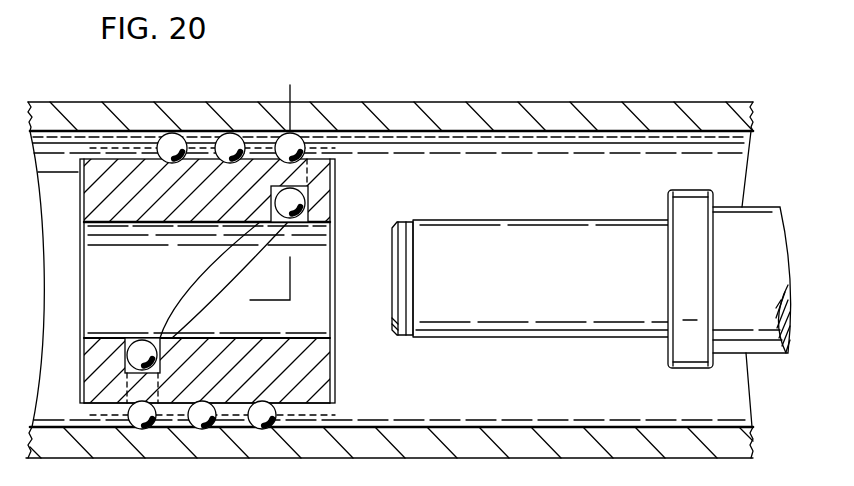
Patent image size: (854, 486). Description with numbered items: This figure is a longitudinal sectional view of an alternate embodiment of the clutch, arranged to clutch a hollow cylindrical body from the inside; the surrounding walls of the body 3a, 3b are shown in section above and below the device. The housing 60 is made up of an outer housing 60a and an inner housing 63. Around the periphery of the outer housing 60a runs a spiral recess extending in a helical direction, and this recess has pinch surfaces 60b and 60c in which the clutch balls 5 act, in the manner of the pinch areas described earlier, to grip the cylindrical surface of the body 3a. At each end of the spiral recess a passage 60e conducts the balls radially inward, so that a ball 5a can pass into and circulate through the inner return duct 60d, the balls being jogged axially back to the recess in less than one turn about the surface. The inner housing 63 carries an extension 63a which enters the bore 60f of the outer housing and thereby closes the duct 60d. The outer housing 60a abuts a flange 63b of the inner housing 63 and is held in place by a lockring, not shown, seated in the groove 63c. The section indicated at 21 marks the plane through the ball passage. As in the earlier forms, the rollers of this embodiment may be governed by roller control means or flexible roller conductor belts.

The body 3a is at (498, 103).
The lower pipe wall 3b is at (546, 394).
The balls 5 is at (139, 418).
The ball in pocket 5a is at (137, 343).
The section line 21 is at (290, 85).
The housing 60 is at (339, 359).
The outer housing 60a is at (336, 380).
The pinch surface 60b is at (150, 165).
The pinch surface 60c is at (200, 163).
The duct 60d is at (170, 330).
The passage 60e is at (293, 175).
The bore 60f is at (176, 272).
The inner housing 63 is at (766, 275).
The extension 63a is at (533, 221).
The flange 63b is at (697, 232).
The groove 63c is at (409, 338).